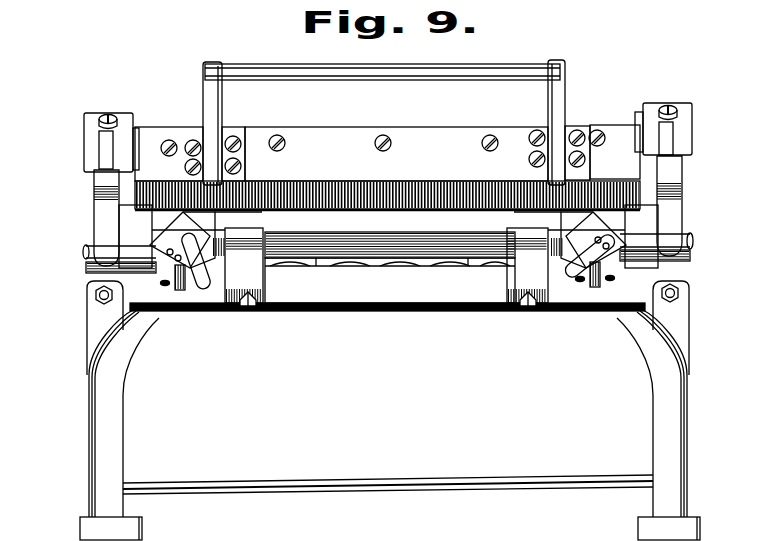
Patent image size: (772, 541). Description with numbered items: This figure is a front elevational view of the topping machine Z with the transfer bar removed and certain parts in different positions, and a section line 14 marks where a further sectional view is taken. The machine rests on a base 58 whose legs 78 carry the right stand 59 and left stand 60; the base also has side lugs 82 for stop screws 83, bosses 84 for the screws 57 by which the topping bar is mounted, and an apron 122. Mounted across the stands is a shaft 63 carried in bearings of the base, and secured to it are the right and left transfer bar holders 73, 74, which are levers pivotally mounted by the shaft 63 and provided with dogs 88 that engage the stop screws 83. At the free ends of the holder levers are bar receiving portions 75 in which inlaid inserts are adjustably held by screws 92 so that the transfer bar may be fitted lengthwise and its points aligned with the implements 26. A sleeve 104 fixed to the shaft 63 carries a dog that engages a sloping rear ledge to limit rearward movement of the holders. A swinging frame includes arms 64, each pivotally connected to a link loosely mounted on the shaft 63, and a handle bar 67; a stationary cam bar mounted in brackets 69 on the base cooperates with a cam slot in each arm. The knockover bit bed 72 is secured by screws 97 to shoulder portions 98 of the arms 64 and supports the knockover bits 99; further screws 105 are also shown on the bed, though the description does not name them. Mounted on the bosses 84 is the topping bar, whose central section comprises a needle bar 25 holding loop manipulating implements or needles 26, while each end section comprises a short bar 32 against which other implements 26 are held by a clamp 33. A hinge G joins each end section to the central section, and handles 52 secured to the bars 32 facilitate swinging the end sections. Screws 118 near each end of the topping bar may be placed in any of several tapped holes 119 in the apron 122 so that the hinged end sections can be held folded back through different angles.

The section line 14 is at (250, 64).
The needle bar 25 is at (418, 259).
The loop manipulating implements 26 is at (160, 217).
The short bar 32 is at (110, 277).
The clamp 33 is at (150, 247).
The handle 52 is at (207, 290).
The screw 57 is at (251, 308).
The base 58 is at (446, 489).
The right stand 59 is at (672, 441).
The left stand 60 is at (98, 456).
The shaft 63 is at (83, 253).
The arm 64 is at (203, 100).
The handle bar 67 is at (440, 72).
The bracket 69 is at (316, 262).
The knockover bit bed 72 is at (332, 135).
The right transfer bar holder 73 is at (665, 136).
The left transfer bar holder 74 is at (100, 153).
The bar receiving portion 75 is at (84, 119).
The leg 78 is at (84, 523).
The side lug 82 is at (96, 341).
The stop screw 83 is at (102, 302).
The boss 84 is at (260, 272).
The dog 88 is at (95, 185).
The screw 92 is at (109, 114).
The screw 97 is at (236, 160).
The shoulder portion 98 is at (185, 130).
The knockover bit 99 is at (410, 185).
The sleeve 104 is at (392, 266).
The screw 105 is at (279, 139).
The screw 118 is at (180, 292).
The tapped hole 119 is at (165, 287).
The apron 122 is at (272, 306).
The hinge G is at (198, 213).
The topping machine Z is at (552, 24).